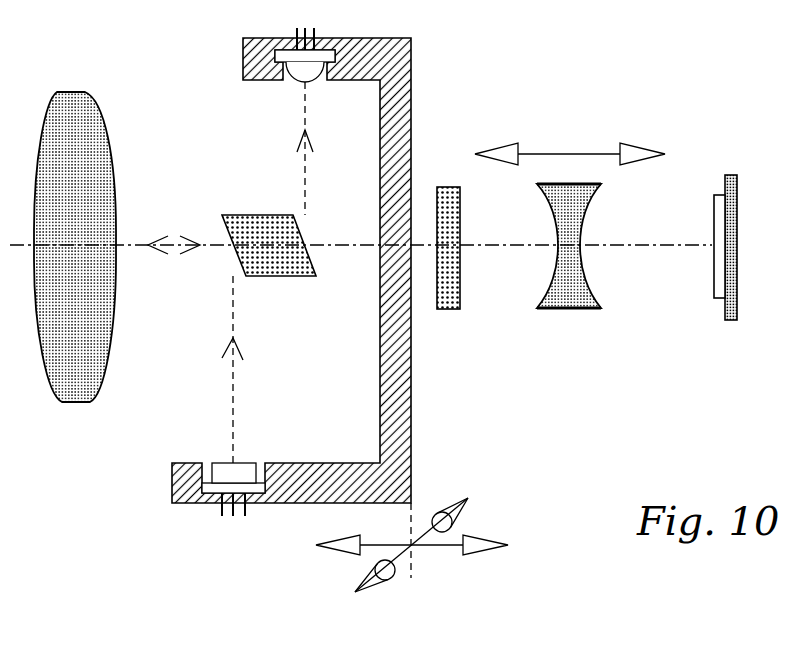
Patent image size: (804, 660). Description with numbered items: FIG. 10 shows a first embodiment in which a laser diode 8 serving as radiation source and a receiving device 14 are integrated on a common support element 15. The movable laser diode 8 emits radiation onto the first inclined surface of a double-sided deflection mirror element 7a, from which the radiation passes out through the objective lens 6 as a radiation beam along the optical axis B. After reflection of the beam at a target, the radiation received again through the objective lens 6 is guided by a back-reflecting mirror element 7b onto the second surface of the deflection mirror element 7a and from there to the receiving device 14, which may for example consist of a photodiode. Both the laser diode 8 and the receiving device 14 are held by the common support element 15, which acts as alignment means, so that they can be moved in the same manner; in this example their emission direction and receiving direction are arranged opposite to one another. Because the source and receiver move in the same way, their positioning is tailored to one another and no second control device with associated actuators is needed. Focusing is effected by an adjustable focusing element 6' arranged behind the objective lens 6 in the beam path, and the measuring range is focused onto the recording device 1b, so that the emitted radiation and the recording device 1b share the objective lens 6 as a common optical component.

The objective lens 6 is at (113, 233).
The receiving device 14 is at (298, 70).
The double-sided deflection mirror element 7a is at (262, 276).
The laser diode 8 is at (230, 480).
The common support element 15 is at (400, 423).
The back-reflecting mirror element 7b is at (452, 195).
The focusing element 6' is at (524, 277).
The optical axis B is at (659, 272).
The recording device 1b is at (722, 298).